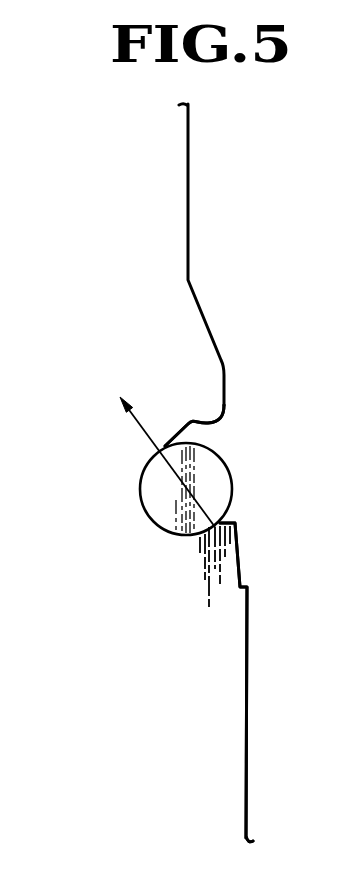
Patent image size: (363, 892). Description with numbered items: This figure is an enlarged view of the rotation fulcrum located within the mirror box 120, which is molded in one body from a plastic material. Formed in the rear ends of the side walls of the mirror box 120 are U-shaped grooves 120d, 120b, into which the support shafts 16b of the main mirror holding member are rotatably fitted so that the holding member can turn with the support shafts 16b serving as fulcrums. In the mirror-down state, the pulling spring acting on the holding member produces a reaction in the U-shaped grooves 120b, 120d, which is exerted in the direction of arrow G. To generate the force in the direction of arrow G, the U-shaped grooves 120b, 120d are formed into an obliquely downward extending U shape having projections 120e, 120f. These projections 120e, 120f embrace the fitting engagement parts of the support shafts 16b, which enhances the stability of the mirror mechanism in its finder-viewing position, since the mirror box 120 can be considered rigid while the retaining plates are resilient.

The mirror box 120 is at (227, 708).
The U-shaped groove 120d is at (190, 433).
The U-shaped groove 120b is at (194, 425).
The support shaft 16b is at (213, 487).
The projection 120e is at (232, 536).
The projection 120f is at (215, 566).
The arrow G is at (157, 458).